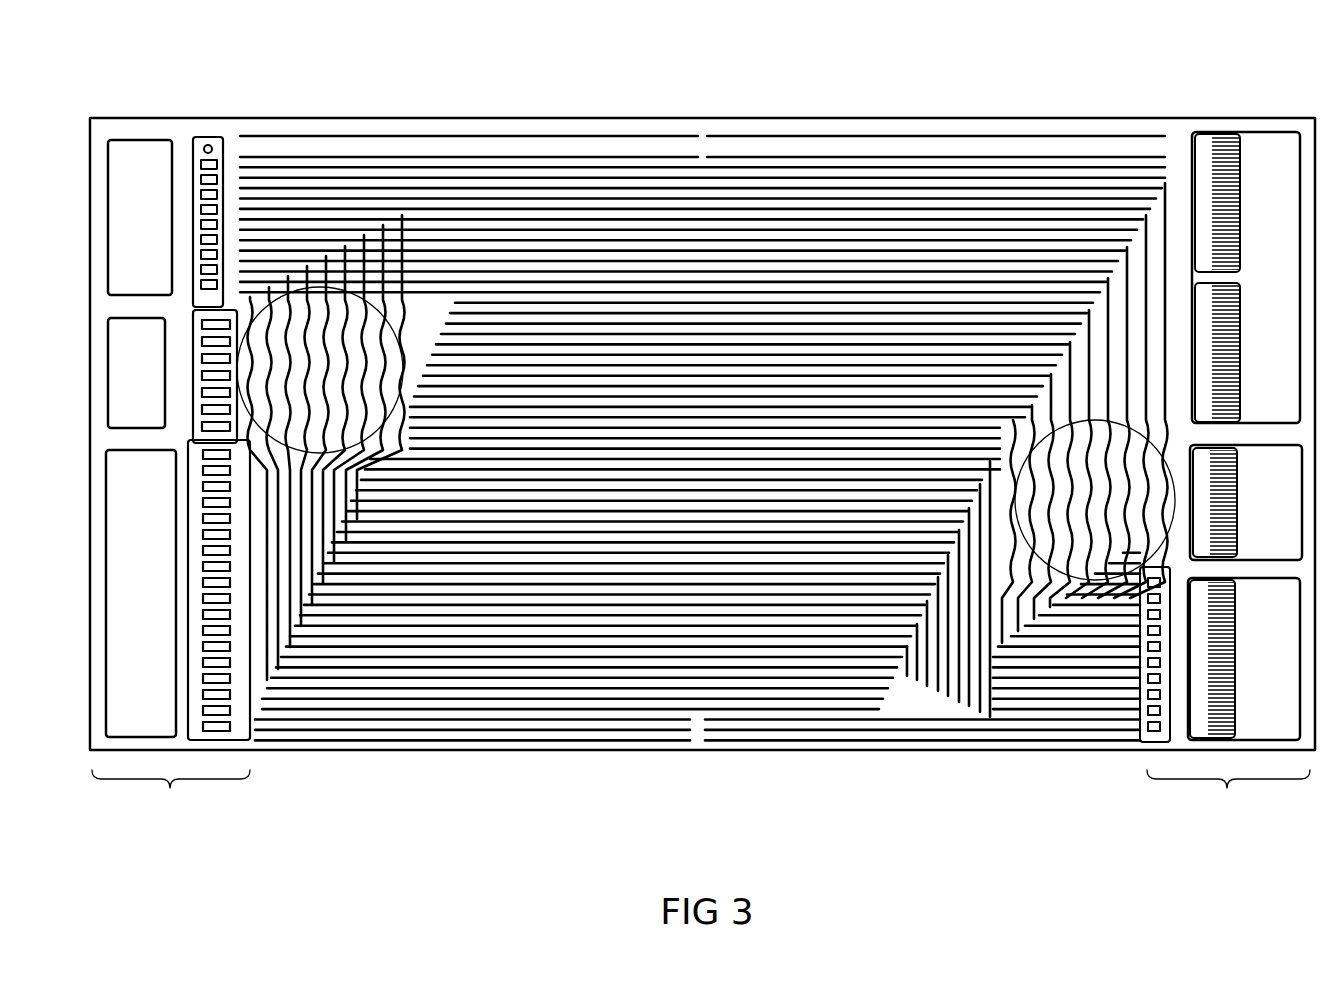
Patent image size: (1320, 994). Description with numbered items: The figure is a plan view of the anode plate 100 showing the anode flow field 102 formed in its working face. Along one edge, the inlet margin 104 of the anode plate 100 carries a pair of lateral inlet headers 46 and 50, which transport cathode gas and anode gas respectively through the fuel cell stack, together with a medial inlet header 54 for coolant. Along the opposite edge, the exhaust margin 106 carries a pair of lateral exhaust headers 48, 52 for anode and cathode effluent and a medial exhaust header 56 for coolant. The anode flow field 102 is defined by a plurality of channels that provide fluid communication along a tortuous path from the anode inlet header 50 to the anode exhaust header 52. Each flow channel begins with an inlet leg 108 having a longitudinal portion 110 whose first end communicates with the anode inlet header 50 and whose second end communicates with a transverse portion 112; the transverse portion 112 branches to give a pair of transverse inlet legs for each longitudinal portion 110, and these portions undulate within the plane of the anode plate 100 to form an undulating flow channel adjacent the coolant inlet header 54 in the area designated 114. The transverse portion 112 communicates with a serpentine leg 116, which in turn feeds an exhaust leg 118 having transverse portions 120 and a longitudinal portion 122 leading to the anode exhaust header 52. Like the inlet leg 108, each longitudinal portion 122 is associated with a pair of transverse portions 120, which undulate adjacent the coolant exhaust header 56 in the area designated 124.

The anode plate 100 is at (465, 792).
The anode flow field 102 is at (893, 738).
The inlet margin 104 is at (1225, 481).
The exhaust margin 106 is at (171, 483).
The inlet leg 108 is at (1015, 658).
The longitudinal portion 110 is at (1100, 655).
The transverse portion 112 is at (993, 628).
The undulating flow channel area 114 is at (1205, 476).
The serpentine leg 116 is at (755, 470).
The exhaust leg 118 is at (392, 213).
The transverse portion 120 is at (430, 240).
The longitudinal portion 122 is at (297, 213).
The undulating flow channel area 124 is at (243, 405).
The air inlet header 46 is at (1260, 274).
The air outlet header 48 is at (128, 656).
The hydrogen inlet header 50 is at (1253, 671).
The hydrogen outlet header 52 is at (131, 228).
The coolant inlet header 54 is at (1258, 536).
The coolant outlet header 56 is at (121, 386).